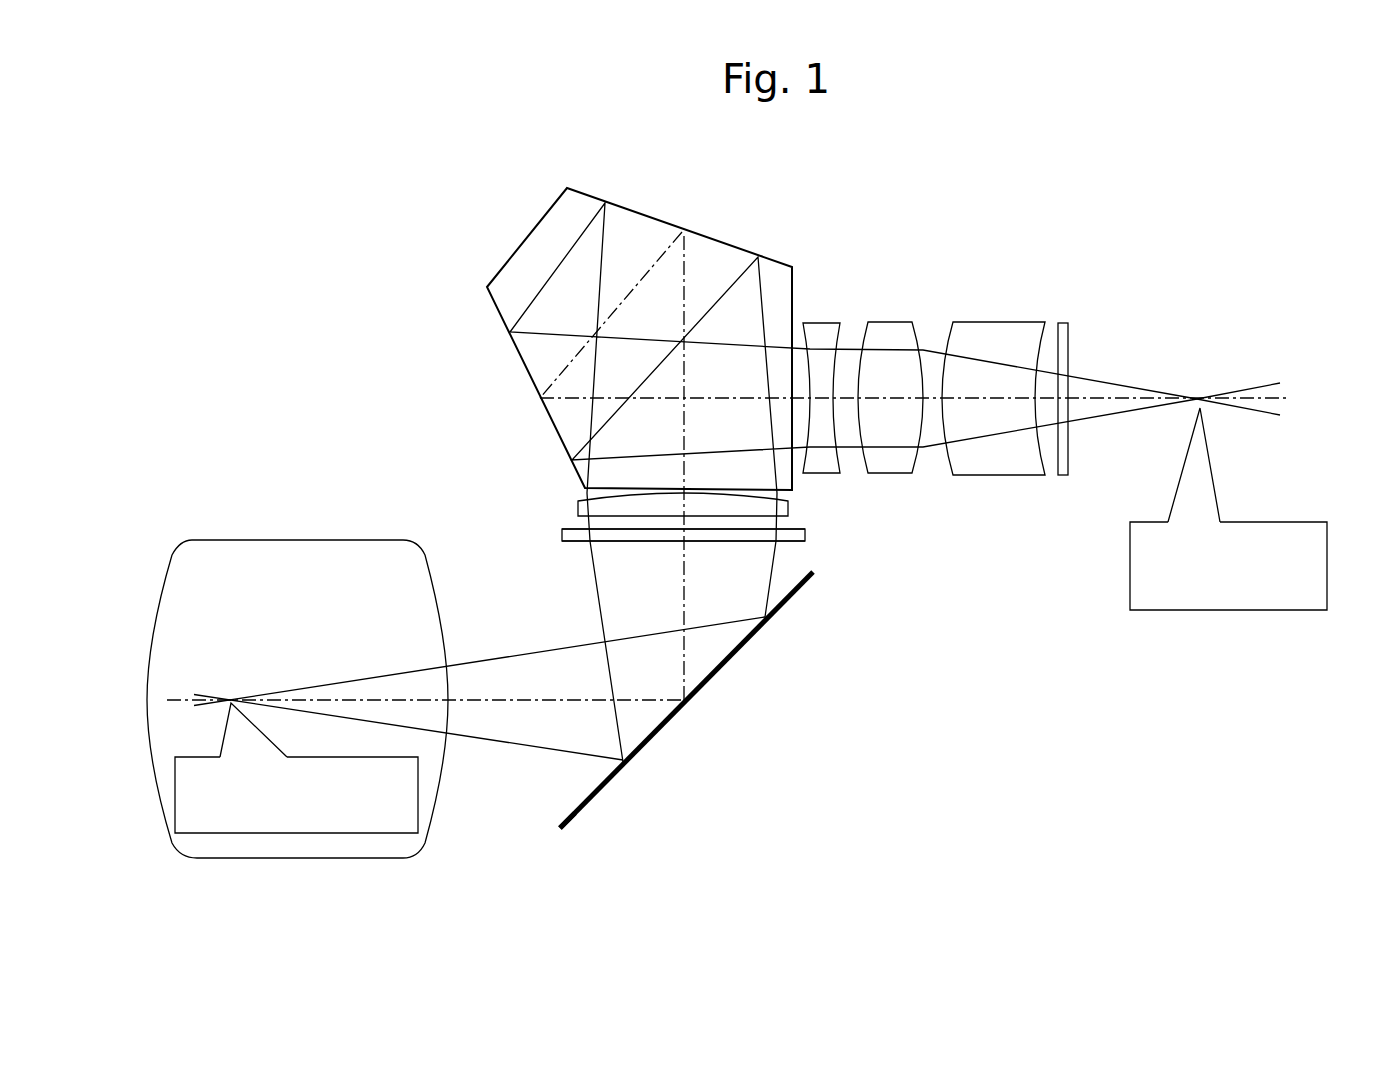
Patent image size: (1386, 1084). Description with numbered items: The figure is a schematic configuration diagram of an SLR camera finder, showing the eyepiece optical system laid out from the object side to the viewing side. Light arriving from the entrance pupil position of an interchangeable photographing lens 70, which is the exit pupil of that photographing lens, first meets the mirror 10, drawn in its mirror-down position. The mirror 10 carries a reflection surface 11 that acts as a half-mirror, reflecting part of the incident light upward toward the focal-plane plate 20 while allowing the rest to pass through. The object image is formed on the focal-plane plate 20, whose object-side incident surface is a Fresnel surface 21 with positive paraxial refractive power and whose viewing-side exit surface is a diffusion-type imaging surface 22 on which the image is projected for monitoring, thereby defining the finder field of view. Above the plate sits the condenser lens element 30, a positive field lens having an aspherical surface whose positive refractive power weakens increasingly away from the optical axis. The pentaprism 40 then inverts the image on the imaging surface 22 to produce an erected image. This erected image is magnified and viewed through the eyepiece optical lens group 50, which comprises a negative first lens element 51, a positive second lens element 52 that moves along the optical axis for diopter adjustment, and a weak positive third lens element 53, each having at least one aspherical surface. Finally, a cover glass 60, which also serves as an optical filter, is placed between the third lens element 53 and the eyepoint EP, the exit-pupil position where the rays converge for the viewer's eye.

The mirror 10 is at (607, 800).
The reflection surface 11 is at (577, 810).
The focal-plane plate 20 is at (812, 534).
The Fresnel surface 21 is at (789, 543).
The imaging surface 22 is at (791, 527).
The condenser lens element 30 is at (568, 507).
The pentaprism 40 is at (658, 220).
The eyepiece optical lens group 50 is at (1045, 273).
The first lens element 51 is at (820, 338).
The second lens element 52 is at (888, 338).
The third lens element 53 is at (997, 338).
The cover glass 60 is at (1066, 465).
The interchangeable photographing lens 70 is at (288, 540).
The eyepoint EP is at (1197, 395).